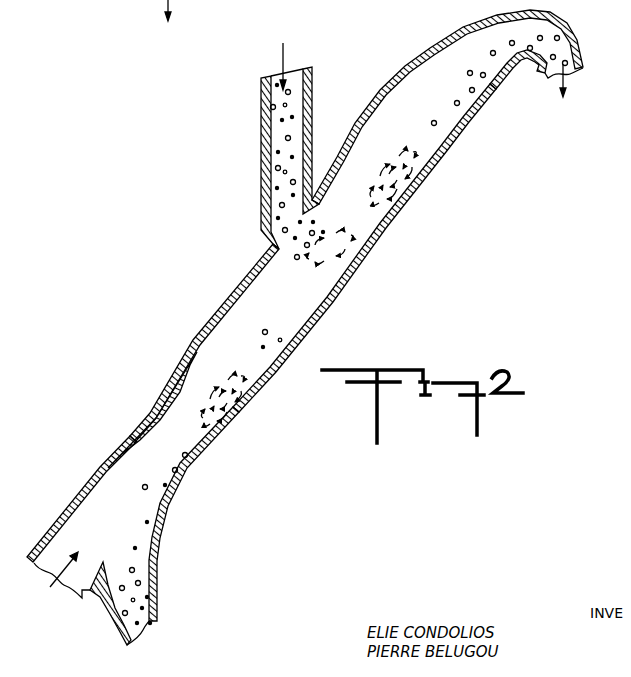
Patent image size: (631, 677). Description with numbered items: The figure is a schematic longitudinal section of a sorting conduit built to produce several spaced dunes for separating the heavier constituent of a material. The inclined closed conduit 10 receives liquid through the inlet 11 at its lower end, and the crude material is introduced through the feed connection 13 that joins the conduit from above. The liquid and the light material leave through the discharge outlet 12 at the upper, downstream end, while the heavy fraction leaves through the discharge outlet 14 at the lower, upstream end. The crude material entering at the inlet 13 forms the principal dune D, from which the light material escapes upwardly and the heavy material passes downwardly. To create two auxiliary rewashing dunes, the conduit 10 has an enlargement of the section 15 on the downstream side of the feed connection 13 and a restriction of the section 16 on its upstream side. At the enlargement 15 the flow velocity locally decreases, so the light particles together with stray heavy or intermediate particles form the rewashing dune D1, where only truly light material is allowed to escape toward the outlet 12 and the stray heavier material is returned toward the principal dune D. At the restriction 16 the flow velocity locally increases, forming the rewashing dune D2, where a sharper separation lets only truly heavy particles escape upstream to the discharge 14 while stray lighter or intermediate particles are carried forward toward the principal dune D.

The inclined closed conduit 10 is at (248, 282).
The inlet for the liquid 11 is at (46, 534).
The discharge outlet for the liquid and the light material 12 is at (550, 73).
The inlet for the crude material 13 is at (260, 163).
The discharge outlet for the heavy fraction 14 is at (167, 591).
The enlargement of the section 15 is at (453, 41).
The restriction of the section 16 is at (128, 452).
The principal dune D is at (312, 278).
The rewashing dune D1 is at (398, 181).
The rewashing dune D2 is at (226, 407).